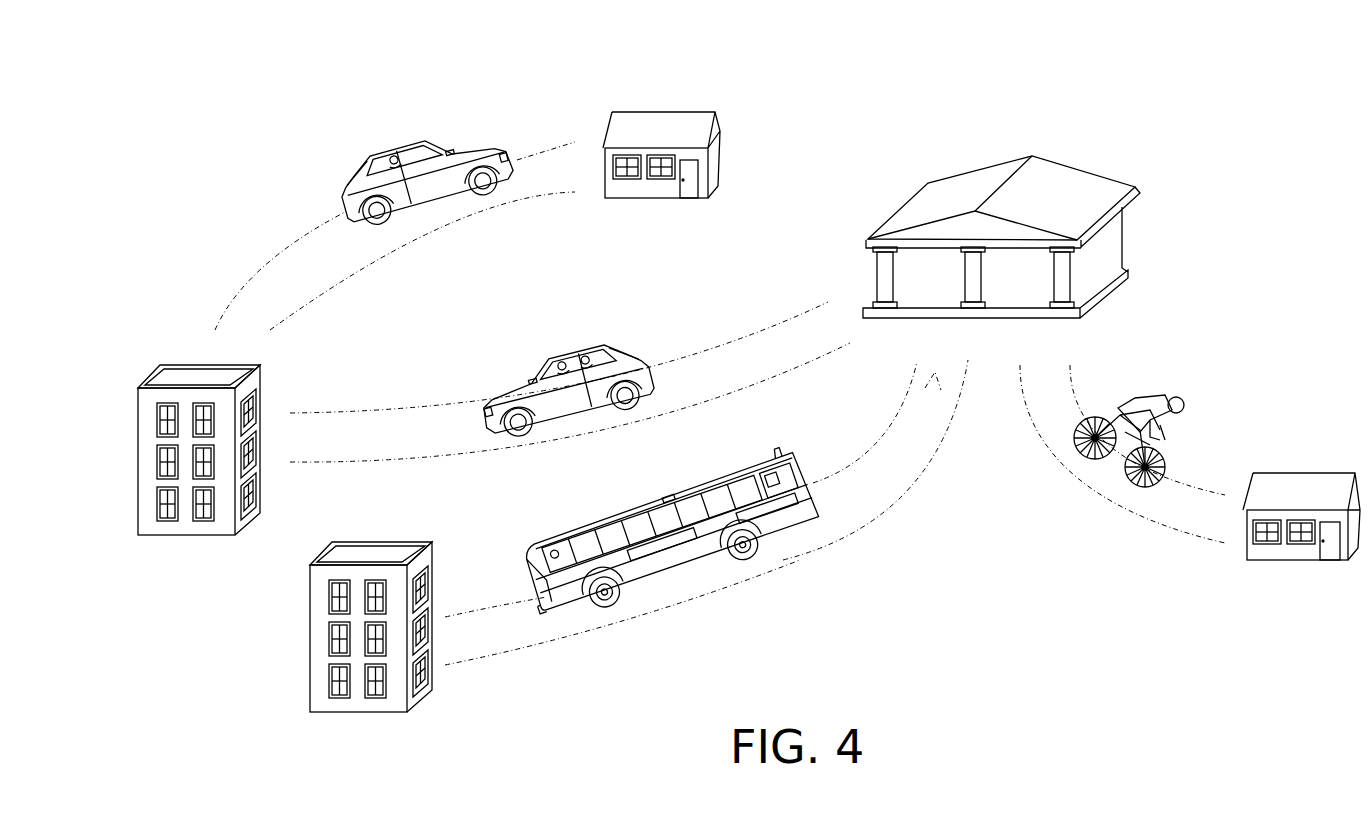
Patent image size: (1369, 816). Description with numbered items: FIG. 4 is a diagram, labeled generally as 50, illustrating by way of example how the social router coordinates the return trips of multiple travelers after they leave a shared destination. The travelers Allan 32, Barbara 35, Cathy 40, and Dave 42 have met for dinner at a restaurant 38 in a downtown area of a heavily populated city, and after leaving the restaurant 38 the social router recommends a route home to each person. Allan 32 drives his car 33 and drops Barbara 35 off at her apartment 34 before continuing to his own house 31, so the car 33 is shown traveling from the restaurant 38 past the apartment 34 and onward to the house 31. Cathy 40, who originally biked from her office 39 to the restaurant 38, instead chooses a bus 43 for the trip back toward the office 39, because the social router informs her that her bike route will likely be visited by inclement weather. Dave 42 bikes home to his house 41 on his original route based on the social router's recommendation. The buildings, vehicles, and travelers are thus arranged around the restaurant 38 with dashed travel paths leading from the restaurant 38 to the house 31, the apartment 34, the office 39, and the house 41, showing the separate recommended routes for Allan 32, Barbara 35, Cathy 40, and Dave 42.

The house 31 is at (722, 161).
The Allan 32 is at (400, 152).
The car 33 is at (463, 148).
The apartment 34 is at (173, 373).
The Barbara 35 is at (595, 345).
The restaurant 38 is at (905, 205).
The office 39 is at (365, 553).
The Cathy 40 is at (582, 523).
The house 41 is at (1303, 473).
The Dave 42 is at (1170, 398).
The bus 43 is at (677, 492).
The environment 50 is at (901, 87).